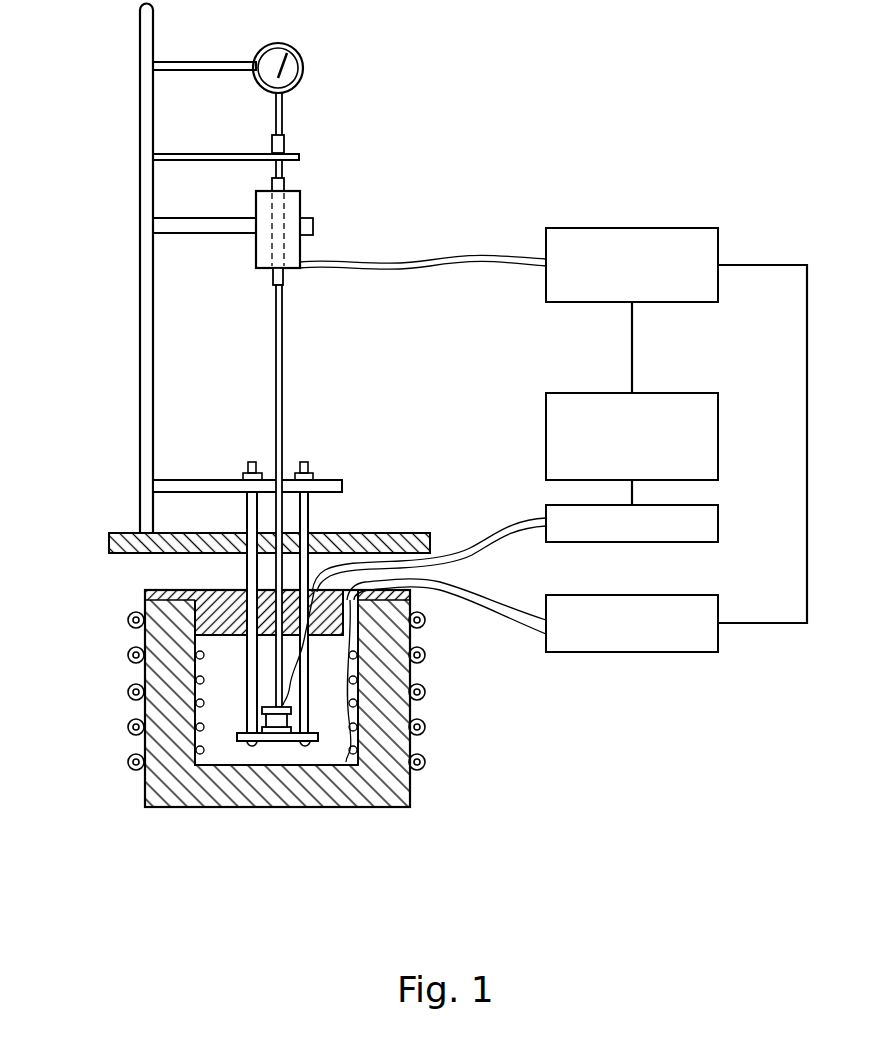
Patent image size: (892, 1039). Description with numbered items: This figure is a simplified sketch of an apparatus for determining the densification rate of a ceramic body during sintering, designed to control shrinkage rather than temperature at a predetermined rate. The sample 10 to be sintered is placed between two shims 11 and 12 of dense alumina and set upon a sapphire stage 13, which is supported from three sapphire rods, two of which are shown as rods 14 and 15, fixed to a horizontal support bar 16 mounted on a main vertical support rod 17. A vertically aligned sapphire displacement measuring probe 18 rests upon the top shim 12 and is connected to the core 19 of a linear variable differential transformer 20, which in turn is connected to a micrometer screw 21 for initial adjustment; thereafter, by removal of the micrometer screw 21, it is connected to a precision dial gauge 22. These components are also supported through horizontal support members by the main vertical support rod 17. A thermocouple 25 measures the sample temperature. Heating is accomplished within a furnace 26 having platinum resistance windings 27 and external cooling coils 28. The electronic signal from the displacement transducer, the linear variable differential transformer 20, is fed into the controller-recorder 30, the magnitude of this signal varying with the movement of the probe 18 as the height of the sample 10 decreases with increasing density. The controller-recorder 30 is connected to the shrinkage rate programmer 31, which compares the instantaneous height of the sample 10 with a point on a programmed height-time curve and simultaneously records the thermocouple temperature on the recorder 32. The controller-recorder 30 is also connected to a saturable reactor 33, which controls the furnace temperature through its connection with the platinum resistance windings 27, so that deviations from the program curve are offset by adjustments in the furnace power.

The sample 10 is at (274, 722).
The shim 11 is at (260, 730).
The shim 12 is at (265, 712).
The sapphire stage 13 is at (290, 735).
The sapphire rod 14 is at (248, 690).
The sapphire rod 15 is at (305, 712).
The horizontal support bar 16 is at (322, 482).
The main vertical support rod 17 is at (142, 452).
The sapphire displacement measuring probe 18 is at (281, 396).
The core 19 is at (282, 276).
The linear variable differential transformer 20 is at (292, 206).
The micrometer screw 21 is at (285, 143).
The precision dial gauge 22 is at (292, 77).
The thermocouple 25 is at (283, 705).
The furnace 26 is at (400, 748).
The platinum resistance windings 27 is at (357, 702).
The external cooling coils 28 is at (424, 768).
The controller-recorder 30 is at (712, 250).
The shrinkage rate programmer 31 is at (712, 437).
The recorder 32 is at (712, 530).
The saturable reactor 33 is at (708, 642).